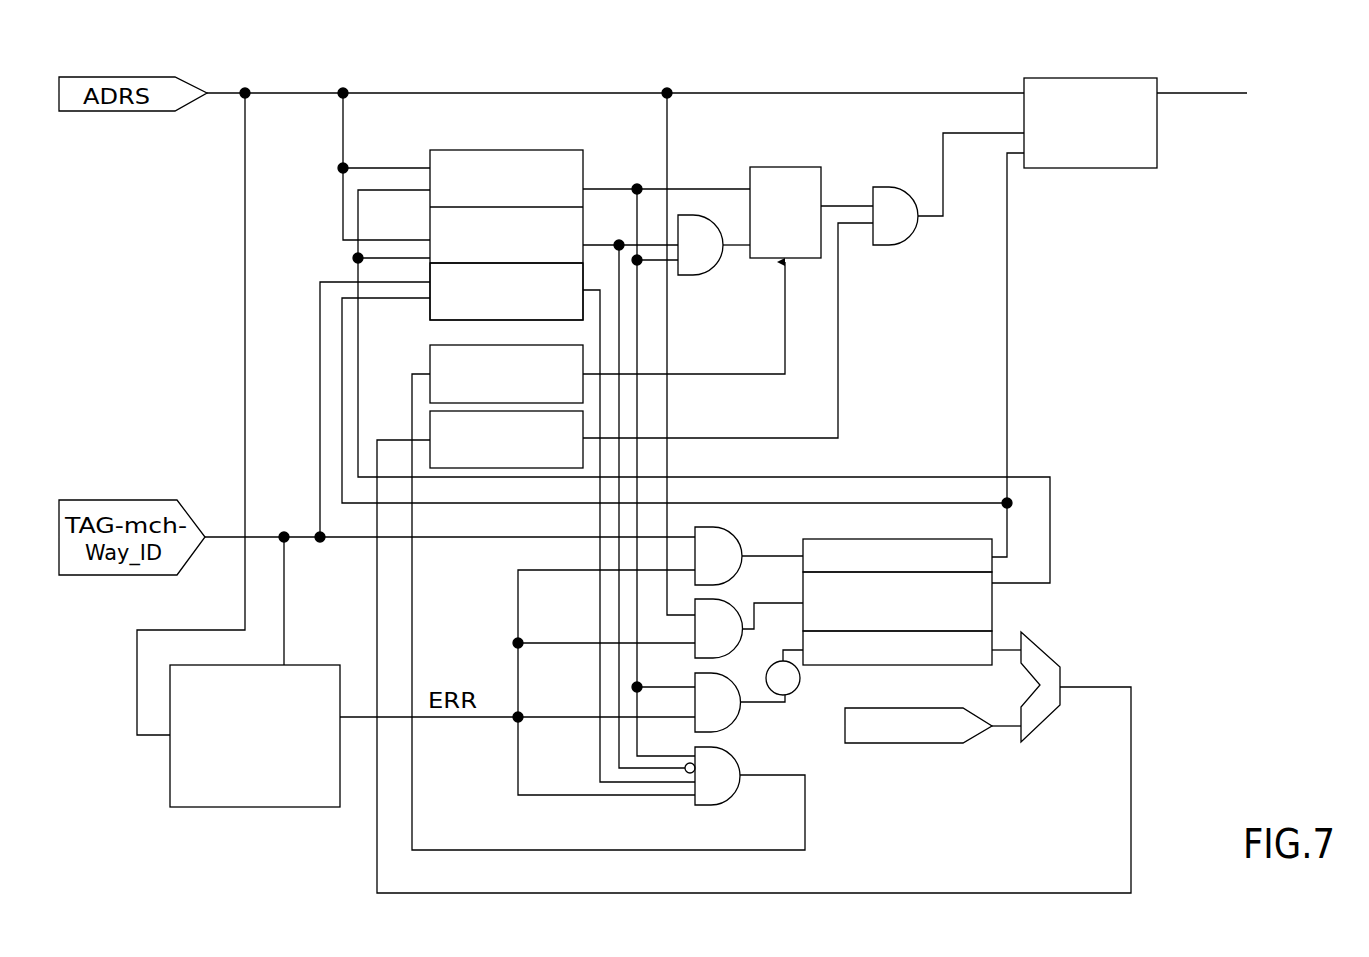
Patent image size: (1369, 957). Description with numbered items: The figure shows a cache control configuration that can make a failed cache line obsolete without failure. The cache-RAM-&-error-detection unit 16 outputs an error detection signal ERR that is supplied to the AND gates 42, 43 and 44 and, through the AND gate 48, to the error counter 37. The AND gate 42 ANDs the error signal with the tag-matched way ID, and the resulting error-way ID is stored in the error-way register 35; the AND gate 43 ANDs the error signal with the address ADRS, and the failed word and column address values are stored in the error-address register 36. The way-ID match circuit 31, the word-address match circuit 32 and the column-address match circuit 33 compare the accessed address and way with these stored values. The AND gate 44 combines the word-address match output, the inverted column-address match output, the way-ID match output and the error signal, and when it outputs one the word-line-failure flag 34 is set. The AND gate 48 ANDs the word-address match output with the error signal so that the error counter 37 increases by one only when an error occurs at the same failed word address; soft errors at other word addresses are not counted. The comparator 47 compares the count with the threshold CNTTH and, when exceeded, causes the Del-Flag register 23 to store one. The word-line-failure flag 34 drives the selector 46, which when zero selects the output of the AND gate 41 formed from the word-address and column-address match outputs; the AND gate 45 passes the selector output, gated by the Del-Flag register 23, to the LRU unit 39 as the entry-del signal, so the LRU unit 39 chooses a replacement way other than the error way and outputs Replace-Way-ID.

The cache-RAM-&-error-detection unit 16 is at (320, 665).
The Del-Flag register 23 is at (430, 422).
The way-ID match circuit 31 is at (430, 316).
The word-address match circuit 32 is at (563, 150).
The column-address match circuit 33 is at (583, 225).
The word-line-failure flag 34 is at (430, 366).
The error-way register 35 is at (895, 539).
The error-address register 36 is at (992, 605).
The error counter 37 is at (895, 665).
The LRU unit 39 is at (1090, 78).
The AND gate 41 is at (705, 273).
The AND gate 42 is at (715, 527).
The AND gate 43 is at (718, 657).
The AND gate 44 is at (718, 804).
The AND gate 45 is at (900, 243).
The selector 46 is at (808, 167).
The comparator 47 is at (1045, 655).
The AND gate 48 is at (718, 731).